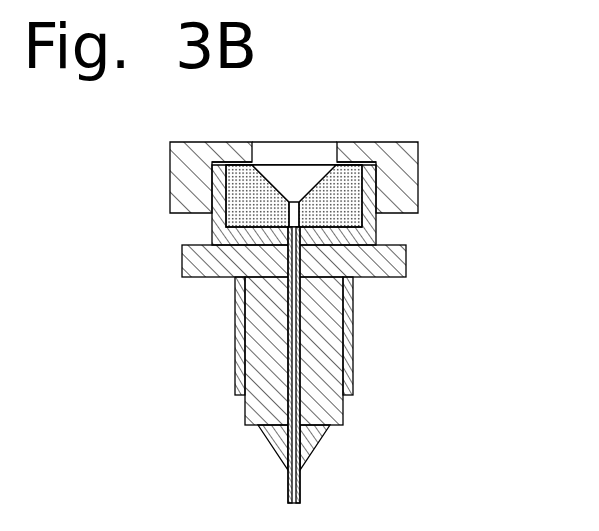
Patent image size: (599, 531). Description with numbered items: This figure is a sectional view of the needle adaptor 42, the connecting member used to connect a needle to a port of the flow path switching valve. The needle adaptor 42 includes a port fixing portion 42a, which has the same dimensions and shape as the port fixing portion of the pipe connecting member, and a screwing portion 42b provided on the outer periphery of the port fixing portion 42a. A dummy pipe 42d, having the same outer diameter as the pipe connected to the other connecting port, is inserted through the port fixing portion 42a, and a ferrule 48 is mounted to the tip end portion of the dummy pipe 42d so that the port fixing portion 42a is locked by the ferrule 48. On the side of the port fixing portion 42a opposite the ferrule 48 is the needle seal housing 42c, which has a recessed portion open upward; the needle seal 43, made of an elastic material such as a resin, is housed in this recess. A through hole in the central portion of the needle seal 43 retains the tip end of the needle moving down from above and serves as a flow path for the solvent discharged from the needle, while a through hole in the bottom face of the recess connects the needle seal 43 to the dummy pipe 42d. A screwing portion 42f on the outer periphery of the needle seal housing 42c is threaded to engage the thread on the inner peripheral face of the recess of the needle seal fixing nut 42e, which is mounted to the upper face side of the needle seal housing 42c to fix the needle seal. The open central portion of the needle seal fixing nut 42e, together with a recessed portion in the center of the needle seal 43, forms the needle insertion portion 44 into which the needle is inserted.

The needle adaptor 42 is at (445, 163).
The port fixing portion 42a is at (327, 393).
The screwing portion 42b is at (348, 356).
The needle seal housing 42c is at (375, 234).
The dummy pipe 42d is at (300, 493).
The needle seal fixing nut 42e is at (395, 152).
The screwing portion 42f is at (351, 166).
The needle seal 43 is at (345, 198).
The needle insertion portion 44 is at (292, 178).
The ferrule 48 is at (312, 442).